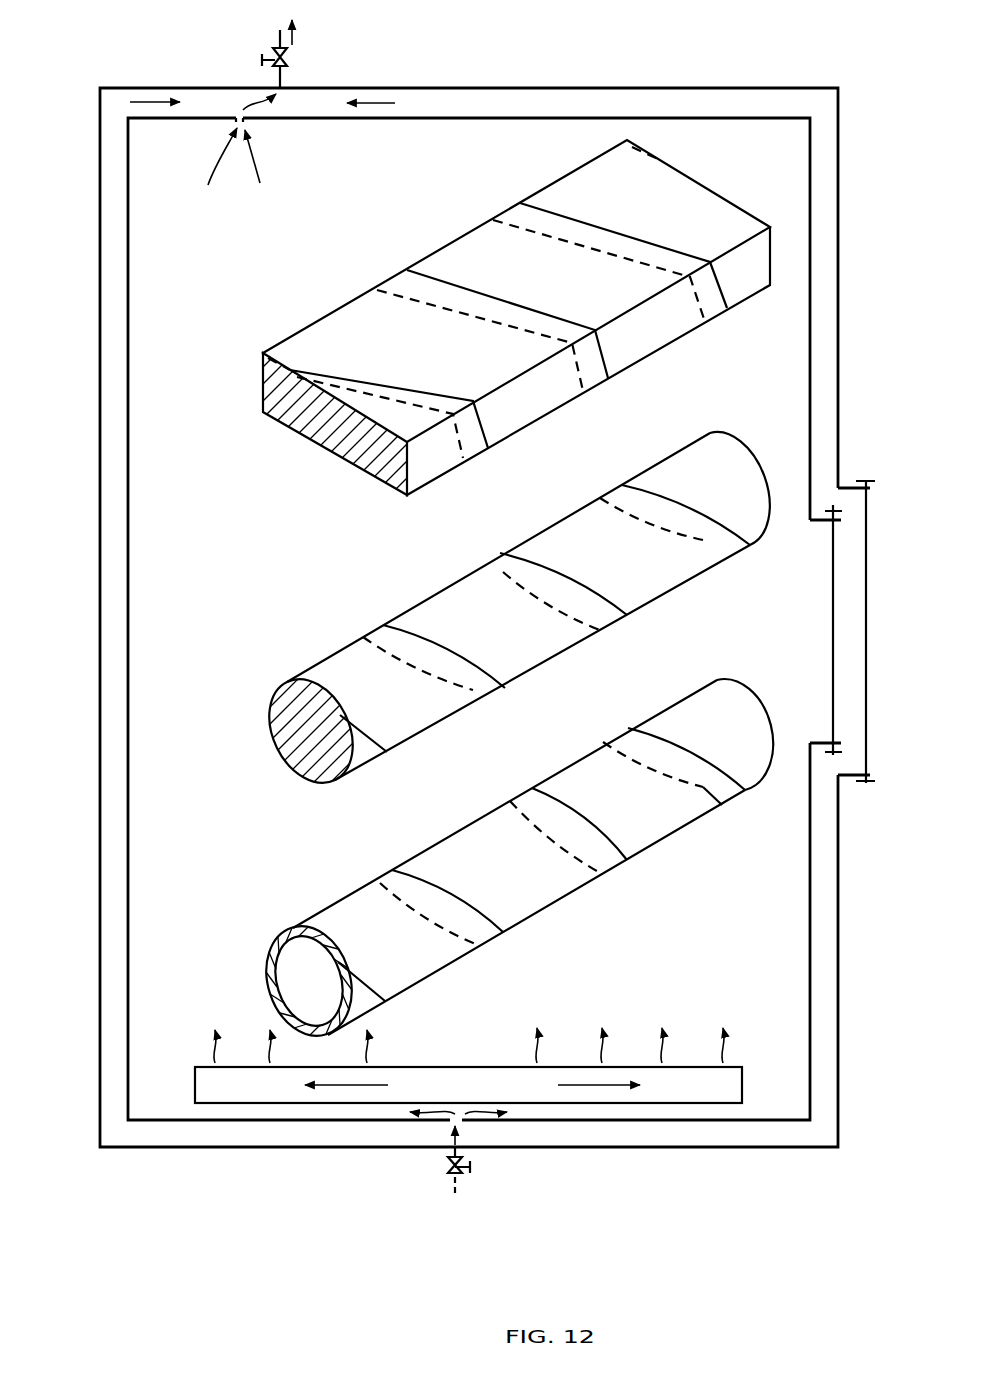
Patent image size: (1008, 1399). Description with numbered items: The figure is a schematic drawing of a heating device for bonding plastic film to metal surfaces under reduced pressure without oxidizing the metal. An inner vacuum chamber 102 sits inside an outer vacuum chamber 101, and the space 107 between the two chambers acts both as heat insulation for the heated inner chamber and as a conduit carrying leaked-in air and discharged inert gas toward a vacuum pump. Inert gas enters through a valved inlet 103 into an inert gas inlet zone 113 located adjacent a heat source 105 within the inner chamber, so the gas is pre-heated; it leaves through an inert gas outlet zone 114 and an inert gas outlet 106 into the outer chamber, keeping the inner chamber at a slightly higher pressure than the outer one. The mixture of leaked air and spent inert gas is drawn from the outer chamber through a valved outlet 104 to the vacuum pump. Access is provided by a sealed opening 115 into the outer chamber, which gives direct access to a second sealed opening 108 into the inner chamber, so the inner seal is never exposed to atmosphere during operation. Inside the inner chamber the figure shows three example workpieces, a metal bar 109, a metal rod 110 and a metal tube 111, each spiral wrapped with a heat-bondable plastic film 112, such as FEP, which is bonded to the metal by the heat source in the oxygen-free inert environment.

The outer vacuum chamber 101 is at (177, 1152).
The inner vacuum chamber 102 is at (673, 1126).
The valved inlet 103 is at (500, 1262).
The valved outlet 104 is at (277, 80).
The heat source 105 is at (742, 1076).
The inert gas outlet 106 is at (236, 112).
The space between the two chambers 107 is at (640, 106).
The sealed opening 108 is at (820, 523).
The metal bar 109 is at (347, 447).
The metal rod 110 is at (335, 762).
The metal tube 111 is at (284, 1006).
The plastic film 112 is at (427, 872).
The inert gas inlet zone 113 is at (472, 1120).
The inert gas outlet zone 114 is at (295, 156).
The sealed opening 115 is at (840, 487).